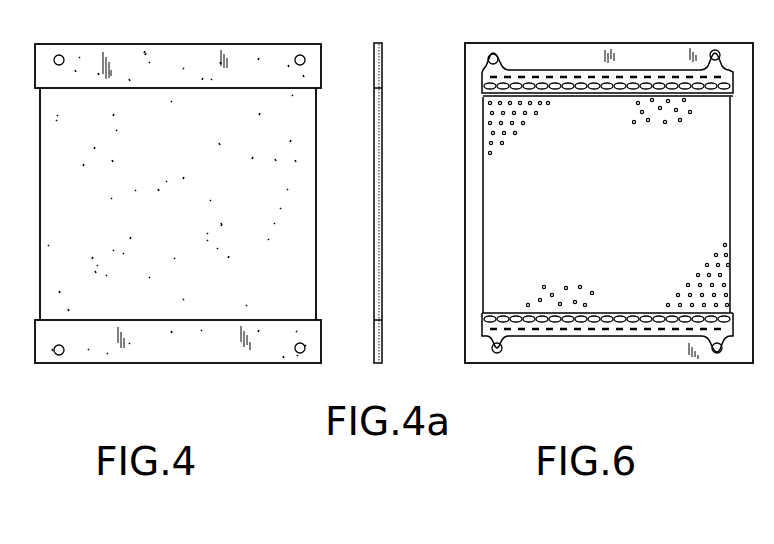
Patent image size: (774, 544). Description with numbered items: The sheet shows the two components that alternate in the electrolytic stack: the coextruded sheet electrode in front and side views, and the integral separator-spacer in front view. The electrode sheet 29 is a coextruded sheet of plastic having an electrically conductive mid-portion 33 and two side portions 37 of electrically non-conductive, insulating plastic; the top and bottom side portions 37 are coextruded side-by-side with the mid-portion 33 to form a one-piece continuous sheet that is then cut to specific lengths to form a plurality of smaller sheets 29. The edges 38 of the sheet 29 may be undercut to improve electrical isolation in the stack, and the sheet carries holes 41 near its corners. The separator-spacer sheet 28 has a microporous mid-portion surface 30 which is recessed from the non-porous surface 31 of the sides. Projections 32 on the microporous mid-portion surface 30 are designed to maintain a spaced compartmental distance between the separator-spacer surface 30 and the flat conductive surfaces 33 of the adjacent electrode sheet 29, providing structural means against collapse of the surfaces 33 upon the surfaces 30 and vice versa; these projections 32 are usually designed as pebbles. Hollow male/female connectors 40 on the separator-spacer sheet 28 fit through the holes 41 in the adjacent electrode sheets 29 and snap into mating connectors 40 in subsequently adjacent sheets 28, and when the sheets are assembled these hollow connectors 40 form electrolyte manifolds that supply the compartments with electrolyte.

In FIG. 6, the separator-spacer sheet 28 is at (601, 215).
In FIG. 4, the electrode sheet 29 is at (178, 202).
In FIG. 4a, the electrode sheet 29 is at (398, 195).
In FIG. 6, the microporous mid-portion surface 30 is at (607, 290).
In FIG. 6, the non-porous surface 31 is at (581, 44).
In FIG. 6, the projections 32 is at (645, 107).
In FIG. 4, the flat conductive surface 33 is at (301, 208).
In FIG. 4a, the flat conductive surface 33 is at (400, 212).
In FIG. 4, the side portion 37 is at (127, 56).
In FIG. 4, the edge 38 is at (317, 161).
In FIG. 6, the hollow male/female connector 40 is at (493, 56).
In FIG. 4, the hole 41 is at (58, 58).
In FIG. 4a, the hole 41 is at (380, 63).